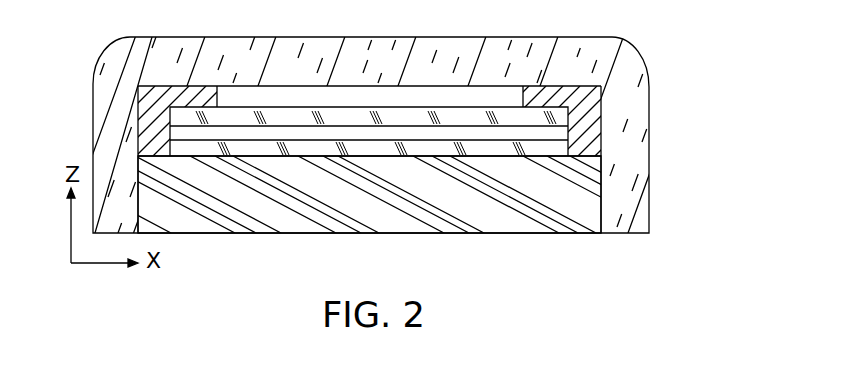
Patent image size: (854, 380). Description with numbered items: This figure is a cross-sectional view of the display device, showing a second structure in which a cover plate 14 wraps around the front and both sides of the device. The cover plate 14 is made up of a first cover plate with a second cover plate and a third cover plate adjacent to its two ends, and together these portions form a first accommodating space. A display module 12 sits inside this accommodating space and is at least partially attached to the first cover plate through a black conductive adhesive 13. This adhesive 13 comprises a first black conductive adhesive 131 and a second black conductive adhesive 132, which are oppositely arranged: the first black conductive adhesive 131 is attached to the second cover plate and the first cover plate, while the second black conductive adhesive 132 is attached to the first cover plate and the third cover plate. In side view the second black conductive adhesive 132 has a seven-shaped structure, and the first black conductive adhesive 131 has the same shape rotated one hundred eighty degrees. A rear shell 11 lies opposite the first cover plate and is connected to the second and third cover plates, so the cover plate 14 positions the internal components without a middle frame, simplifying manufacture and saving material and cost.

The rear shell 11 is at (575, 201).
The display module 12 is at (548, 144).
The black conductive adhesive 13 is at (139, 128).
The first black conductive adhesive 131 is at (141, 87).
The second black conductive adhesive 132 is at (601, 96).
The cover plate 14 is at (614, 47).